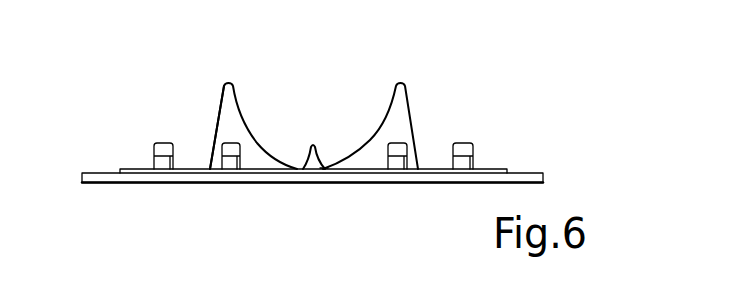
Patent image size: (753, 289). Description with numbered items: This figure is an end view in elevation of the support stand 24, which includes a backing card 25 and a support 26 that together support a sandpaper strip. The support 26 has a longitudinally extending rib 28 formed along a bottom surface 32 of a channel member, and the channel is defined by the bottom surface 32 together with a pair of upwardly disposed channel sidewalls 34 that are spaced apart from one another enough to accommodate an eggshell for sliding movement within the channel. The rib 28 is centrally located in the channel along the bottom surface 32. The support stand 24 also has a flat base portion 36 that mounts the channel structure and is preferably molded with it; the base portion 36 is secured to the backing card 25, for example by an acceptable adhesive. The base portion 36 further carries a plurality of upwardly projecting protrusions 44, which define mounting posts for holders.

The support stand 24 is at (500, 35).
The backing card 25 is at (527, 174).
The support 26 is at (218, 114).
The rib 28 is at (311, 144).
The bottom surface 32 is at (325, 168).
The channel sidewalls 34 is at (239, 115).
The base portion 36 is at (493, 169).
The protrusions 44 is at (163, 143).